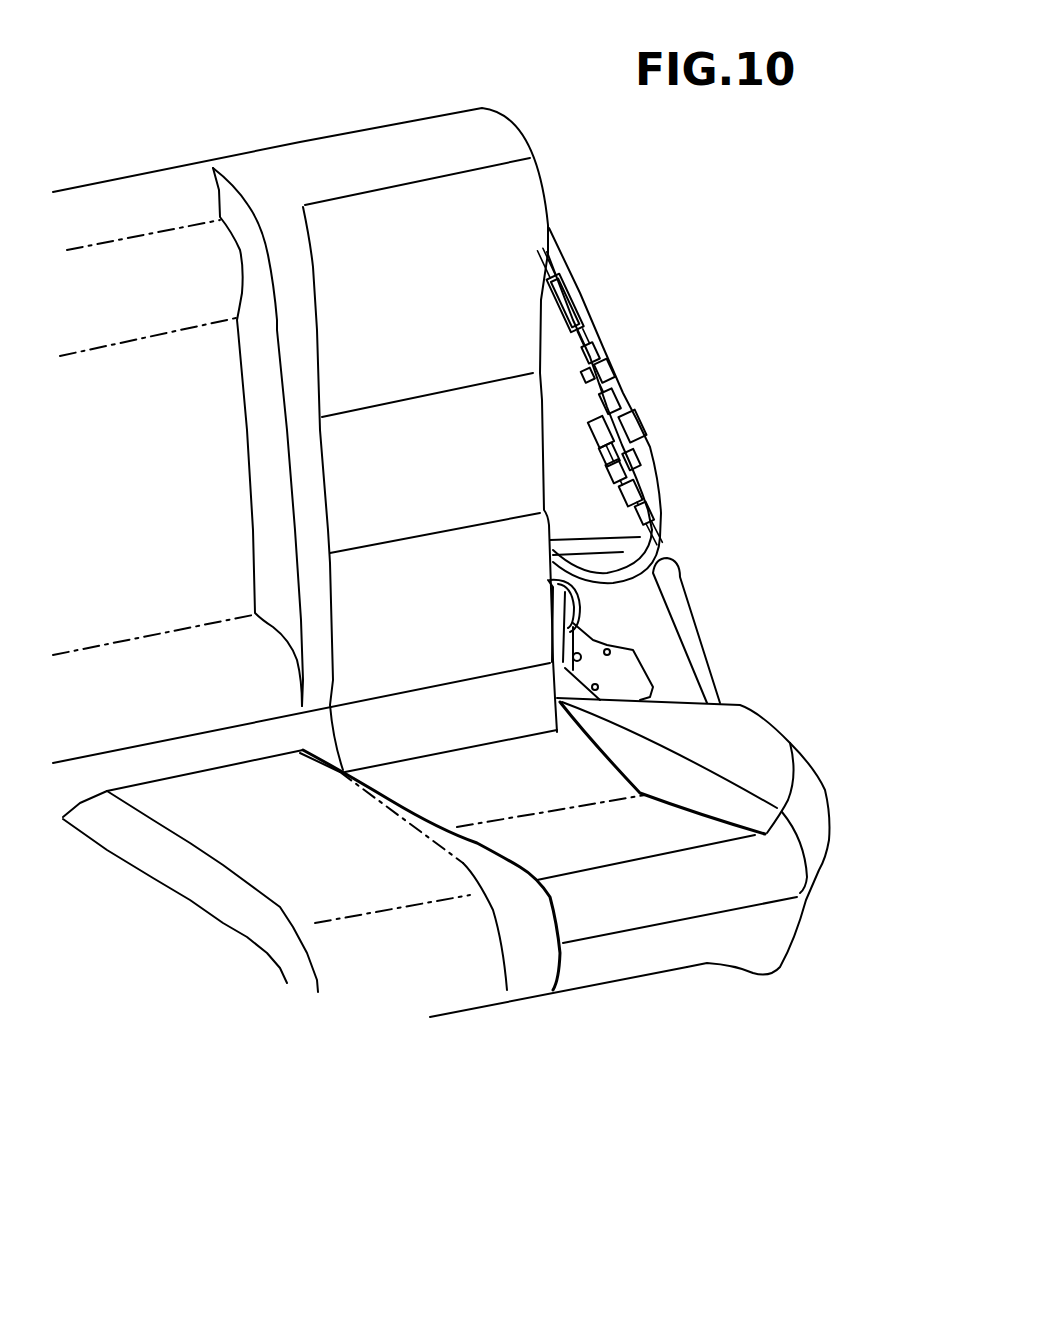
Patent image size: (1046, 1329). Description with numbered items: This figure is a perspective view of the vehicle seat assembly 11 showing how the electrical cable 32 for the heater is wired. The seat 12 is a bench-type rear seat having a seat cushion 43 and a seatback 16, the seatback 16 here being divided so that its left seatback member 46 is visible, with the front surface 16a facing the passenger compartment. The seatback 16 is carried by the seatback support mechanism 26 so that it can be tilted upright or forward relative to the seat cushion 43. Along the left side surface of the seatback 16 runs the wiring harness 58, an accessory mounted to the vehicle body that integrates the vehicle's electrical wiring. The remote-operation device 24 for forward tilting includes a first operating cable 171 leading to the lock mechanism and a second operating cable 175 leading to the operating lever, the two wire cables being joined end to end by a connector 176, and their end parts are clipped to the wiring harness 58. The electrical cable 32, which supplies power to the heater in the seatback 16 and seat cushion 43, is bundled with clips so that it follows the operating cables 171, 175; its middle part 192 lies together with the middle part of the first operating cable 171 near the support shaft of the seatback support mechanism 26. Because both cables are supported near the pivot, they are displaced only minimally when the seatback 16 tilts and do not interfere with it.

The vehicle seat assembly 11 is at (100, 124).
The front surface of the seatback 16a is at (408, 238).
The seat 12 is at (617, 1145).
The seatback 16 is at (311, 881).
The left seatback member 46 is at (417, 616).
The seat cushion 43 is at (593, 829).
The wiring harness 58 is at (557, 243).
The remote-operation device 24 is at (590, 346).
The second operating cable 175 is at (573, 424).
The connector 176 is at (652, 450).
The electrical cable 32 is at (658, 473).
The middle part of the electrical cable 192 is at (560, 557).
The first operating cable 171 is at (652, 575).
The seatback support mechanism 26 is at (612, 617).